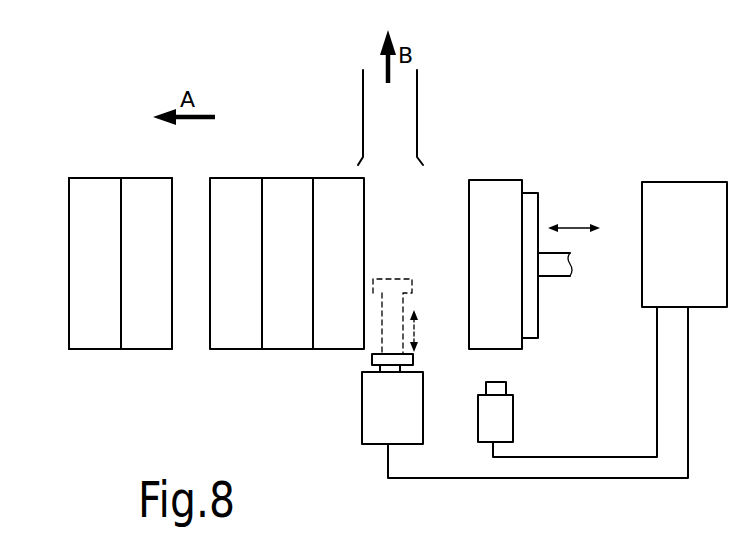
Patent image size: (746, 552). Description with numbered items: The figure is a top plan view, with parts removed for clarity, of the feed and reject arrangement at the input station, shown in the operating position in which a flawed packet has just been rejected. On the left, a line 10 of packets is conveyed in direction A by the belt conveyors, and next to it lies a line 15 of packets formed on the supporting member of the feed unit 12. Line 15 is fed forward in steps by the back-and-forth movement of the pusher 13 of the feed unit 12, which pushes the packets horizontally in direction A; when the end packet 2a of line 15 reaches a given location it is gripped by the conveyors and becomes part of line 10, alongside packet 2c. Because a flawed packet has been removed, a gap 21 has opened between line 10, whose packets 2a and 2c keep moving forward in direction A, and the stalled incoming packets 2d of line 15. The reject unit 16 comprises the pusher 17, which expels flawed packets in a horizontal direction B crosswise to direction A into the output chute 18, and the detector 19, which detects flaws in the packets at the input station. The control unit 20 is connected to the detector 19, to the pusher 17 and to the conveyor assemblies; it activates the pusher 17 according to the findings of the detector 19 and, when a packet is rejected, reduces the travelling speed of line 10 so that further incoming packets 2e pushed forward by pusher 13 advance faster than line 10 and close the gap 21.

The line of packets 10 is at (94, 248).
The gap 21 is at (252, 248).
The line of packets 15 is at (262, 157).
The incoming packets 2d is at (282, 188).
The end packet 2a is at (145, 340).
The packet 2c is at (77, 300).
The output chute 18 is at (402, 104).
The feed unit 12 is at (549, 213).
The incoming packets 2e is at (494, 190).
The pusher 13 is at (533, 316).
The pusher 17 is at (405, 359).
The detector 19 is at (503, 422).
The control unit 20 is at (695, 263).
The reject unit 16 is at (449, 487).